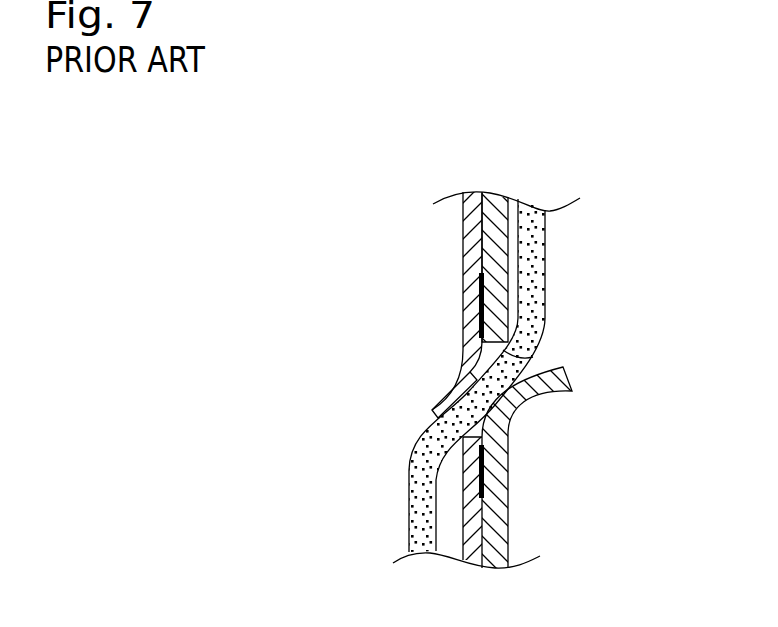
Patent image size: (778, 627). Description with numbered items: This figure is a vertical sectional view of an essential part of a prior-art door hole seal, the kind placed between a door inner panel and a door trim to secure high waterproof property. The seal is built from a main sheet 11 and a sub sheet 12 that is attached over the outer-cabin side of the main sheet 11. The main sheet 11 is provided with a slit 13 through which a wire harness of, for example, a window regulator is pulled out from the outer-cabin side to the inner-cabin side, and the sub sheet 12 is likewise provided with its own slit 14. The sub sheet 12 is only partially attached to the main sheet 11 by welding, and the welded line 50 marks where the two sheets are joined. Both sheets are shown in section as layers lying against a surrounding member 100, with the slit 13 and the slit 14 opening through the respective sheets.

The main sheet 11 is at (493, 208).
The sub sheet 12 is at (463, 292).
The slit 13 is at (533, 359).
The slit 14 is at (435, 421).
The welded line 50 is at (485, 298).
The flexible substrate 100 is at (547, 263).